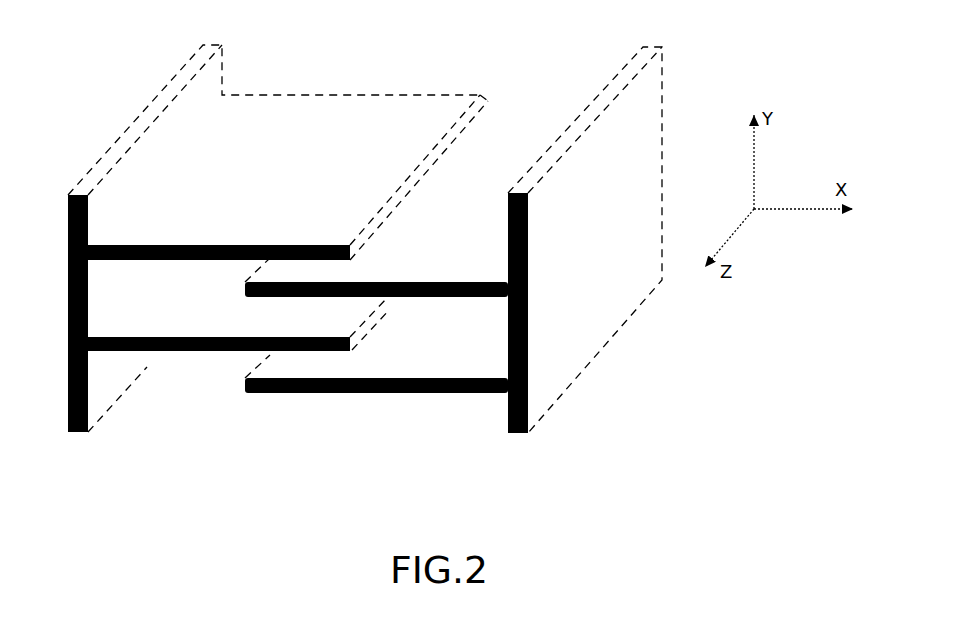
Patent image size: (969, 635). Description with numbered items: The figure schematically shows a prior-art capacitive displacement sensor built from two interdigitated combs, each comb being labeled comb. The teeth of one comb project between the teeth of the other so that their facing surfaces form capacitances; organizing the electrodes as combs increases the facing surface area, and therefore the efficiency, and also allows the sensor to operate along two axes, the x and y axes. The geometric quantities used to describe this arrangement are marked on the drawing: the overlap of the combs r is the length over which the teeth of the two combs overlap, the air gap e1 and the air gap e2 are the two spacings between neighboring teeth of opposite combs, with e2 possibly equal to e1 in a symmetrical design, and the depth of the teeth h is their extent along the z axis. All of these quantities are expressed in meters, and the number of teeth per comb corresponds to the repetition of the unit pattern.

The element comb is at (543, 393).
The depth of the teeth of the combs h is at (497, 105).
The overlap of the combs r is at (345, 232).
The air gap 1 e1 is at (342, 260).
The air gap 2 e2 is at (342, 297).